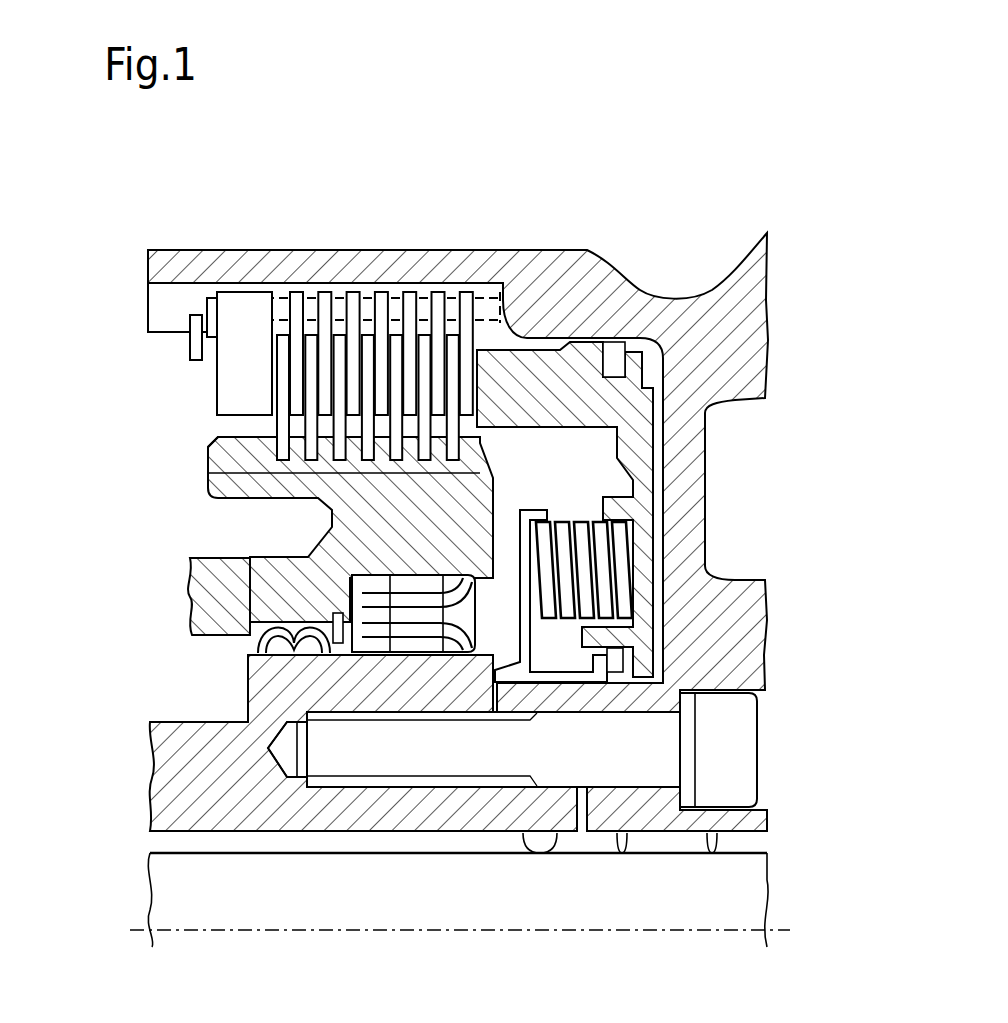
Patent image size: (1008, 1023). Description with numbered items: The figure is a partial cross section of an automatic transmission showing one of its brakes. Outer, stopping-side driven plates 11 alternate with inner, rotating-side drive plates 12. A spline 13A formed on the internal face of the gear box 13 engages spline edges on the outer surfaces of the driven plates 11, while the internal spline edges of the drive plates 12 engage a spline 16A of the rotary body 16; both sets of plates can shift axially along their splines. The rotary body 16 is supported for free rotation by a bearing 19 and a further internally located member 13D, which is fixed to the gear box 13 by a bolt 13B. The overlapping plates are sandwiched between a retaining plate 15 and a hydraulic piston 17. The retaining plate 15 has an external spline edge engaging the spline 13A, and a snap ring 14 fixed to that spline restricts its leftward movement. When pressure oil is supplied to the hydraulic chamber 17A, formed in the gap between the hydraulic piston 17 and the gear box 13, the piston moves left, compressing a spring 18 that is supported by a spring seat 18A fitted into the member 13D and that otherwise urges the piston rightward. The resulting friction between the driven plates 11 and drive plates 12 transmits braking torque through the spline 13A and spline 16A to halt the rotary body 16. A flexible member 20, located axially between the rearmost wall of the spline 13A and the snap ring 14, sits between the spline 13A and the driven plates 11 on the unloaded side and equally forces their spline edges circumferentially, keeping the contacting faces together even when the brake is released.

The driven plates 11 is at (381, 278).
The drive plates 12 is at (428, 413).
The gear box 13 is at (411, 436).
The spline 13A is at (121, 312).
The bolt 13B is at (571, 750).
The member 13D is at (401, 743).
The snap ring 14 is at (119, 359).
The retaining plate 15 is at (168, 374).
The rotary body 16 is at (300, 540).
The spline 16A is at (267, 467).
The hydraulic piston 17 is at (565, 409).
The hydraulic chamber 17A is at (739, 553).
The spring 18 is at (678, 570).
The spring seat 18A is at (559, 762).
The bearing 19 is at (413, 794).
The flexible member 20 is at (368, 232).